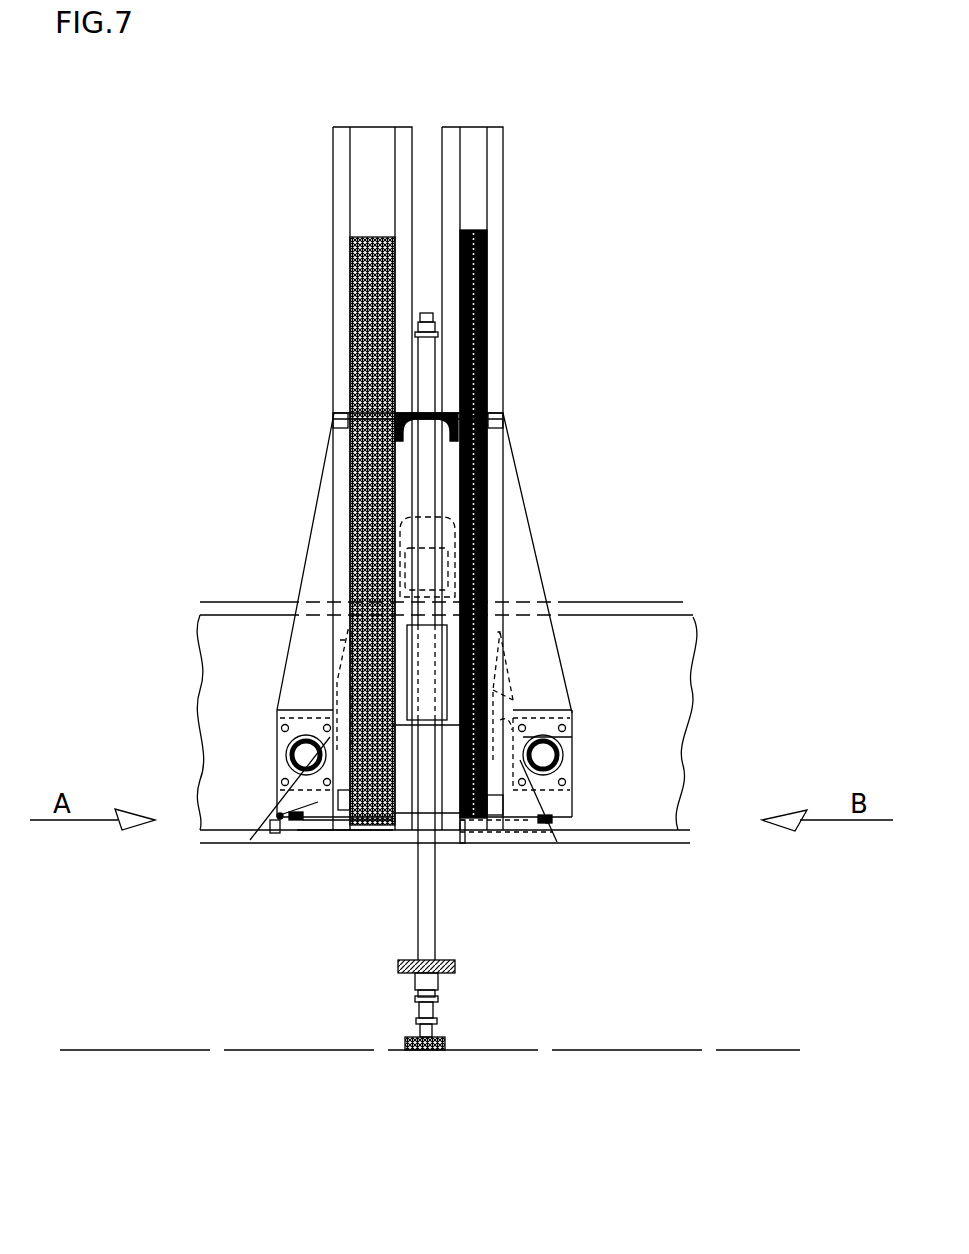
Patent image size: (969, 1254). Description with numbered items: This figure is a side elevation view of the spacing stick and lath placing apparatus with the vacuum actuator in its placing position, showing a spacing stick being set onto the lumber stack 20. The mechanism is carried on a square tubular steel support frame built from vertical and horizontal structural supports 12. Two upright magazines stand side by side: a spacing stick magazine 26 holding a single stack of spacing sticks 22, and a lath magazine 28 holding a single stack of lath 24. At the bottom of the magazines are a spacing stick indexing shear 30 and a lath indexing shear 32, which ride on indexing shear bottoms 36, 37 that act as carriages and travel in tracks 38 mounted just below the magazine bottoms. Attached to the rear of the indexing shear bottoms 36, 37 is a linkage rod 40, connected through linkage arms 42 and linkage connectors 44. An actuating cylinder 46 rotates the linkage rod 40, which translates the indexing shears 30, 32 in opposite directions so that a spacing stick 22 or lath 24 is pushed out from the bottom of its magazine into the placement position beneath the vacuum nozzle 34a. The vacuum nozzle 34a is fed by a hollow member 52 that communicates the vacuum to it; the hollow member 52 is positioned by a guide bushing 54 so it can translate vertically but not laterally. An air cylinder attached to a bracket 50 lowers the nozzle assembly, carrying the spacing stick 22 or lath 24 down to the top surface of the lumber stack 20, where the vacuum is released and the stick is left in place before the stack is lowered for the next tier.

The structural supports 12 is at (680, 602).
The lumber stack 20 is at (532, 1099).
The spacing sticks 22 is at (352, 333).
The lath 24 is at (487, 332).
The spacing stick magazine 26 is at (375, 127).
The lath magazine 28 is at (472, 127).
The spacing stick indexing shear 30 is at (327, 833).
The lath indexing shear 32 is at (507, 815).
The vacuum nozzle 34a is at (433, 1030).
The indexing shear bottom 36 is at (393, 835).
The indexing shear bottom 37 is at (480, 820).
The tracks 38 is at (323, 837).
The linkage rod 40 is at (283, 760).
The linkage arm 42 is at (250, 840).
The linkage connector 44 is at (280, 818).
The actuating cylinder 46 is at (340, 683).
The bracket 50 is at (447, 727).
The hollow member 52 is at (427, 260).
The guide bushing 54 is at (447, 645).